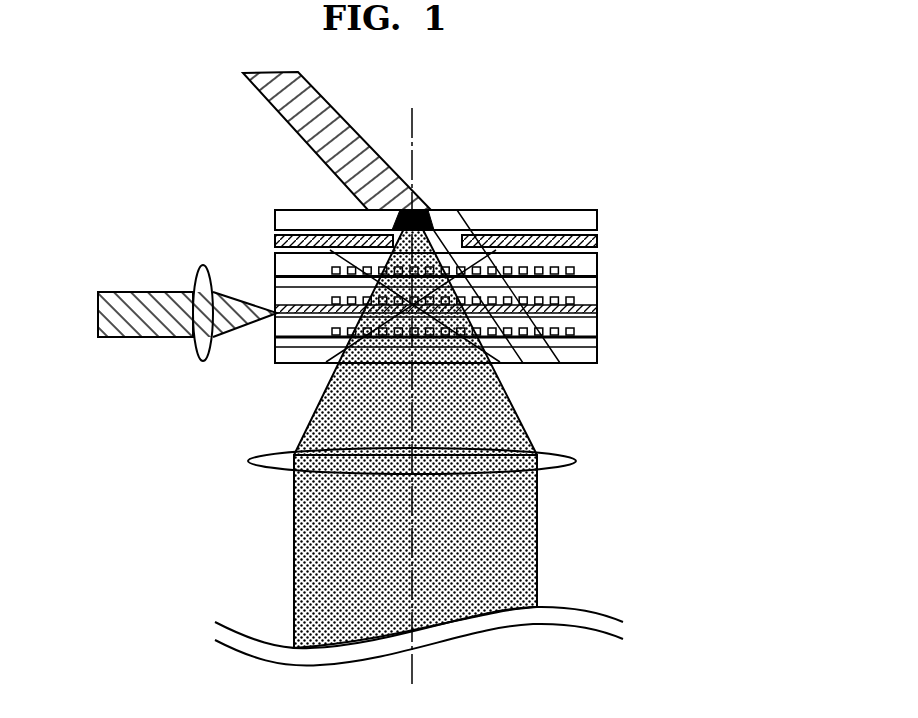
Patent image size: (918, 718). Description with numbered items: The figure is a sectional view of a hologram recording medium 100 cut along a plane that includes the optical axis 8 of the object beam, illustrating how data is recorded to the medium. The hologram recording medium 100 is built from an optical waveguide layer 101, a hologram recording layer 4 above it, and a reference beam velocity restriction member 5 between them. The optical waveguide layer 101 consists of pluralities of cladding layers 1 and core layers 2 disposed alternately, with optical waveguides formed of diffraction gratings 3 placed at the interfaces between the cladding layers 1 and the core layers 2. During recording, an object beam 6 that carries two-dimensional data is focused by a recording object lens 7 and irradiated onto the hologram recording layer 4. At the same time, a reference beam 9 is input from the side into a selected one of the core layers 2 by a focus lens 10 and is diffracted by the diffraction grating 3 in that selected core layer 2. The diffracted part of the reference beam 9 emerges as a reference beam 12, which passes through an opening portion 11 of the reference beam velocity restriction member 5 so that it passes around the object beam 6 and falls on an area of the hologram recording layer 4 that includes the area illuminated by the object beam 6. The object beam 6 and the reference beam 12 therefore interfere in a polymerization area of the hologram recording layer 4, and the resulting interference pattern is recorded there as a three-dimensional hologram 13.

The cladding layer 1 is at (593, 352).
The core layer 2 is at (326, 337).
The diffraction grating 3 is at (530, 338).
The hologram recording layer 4 is at (578, 210).
The reference beam velocity restriction member 5 is at (273, 245).
The object beam 6 is at (497, 540).
The recording object lens 7 is at (512, 460).
The optical axis 8 is at (413, 503).
The reference beam 9 is at (106, 318).
The focus lens 10 is at (202, 347).
The opening portion 11 is at (462, 240).
The reference beam 12 is at (322, 147).
The three-dimensional hologram 13 is at (430, 210).
The hologram recording medium 100 is at (498, 278).
The optical waveguide layer 101 is at (483, 344).